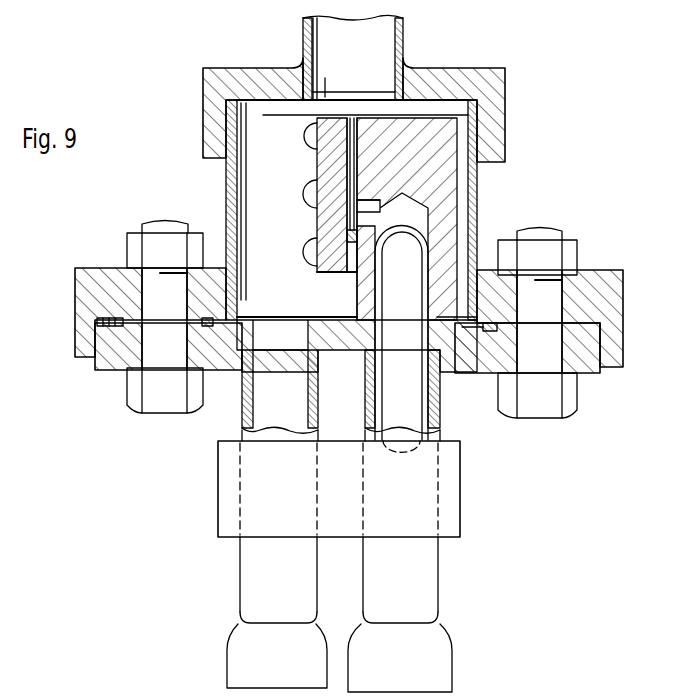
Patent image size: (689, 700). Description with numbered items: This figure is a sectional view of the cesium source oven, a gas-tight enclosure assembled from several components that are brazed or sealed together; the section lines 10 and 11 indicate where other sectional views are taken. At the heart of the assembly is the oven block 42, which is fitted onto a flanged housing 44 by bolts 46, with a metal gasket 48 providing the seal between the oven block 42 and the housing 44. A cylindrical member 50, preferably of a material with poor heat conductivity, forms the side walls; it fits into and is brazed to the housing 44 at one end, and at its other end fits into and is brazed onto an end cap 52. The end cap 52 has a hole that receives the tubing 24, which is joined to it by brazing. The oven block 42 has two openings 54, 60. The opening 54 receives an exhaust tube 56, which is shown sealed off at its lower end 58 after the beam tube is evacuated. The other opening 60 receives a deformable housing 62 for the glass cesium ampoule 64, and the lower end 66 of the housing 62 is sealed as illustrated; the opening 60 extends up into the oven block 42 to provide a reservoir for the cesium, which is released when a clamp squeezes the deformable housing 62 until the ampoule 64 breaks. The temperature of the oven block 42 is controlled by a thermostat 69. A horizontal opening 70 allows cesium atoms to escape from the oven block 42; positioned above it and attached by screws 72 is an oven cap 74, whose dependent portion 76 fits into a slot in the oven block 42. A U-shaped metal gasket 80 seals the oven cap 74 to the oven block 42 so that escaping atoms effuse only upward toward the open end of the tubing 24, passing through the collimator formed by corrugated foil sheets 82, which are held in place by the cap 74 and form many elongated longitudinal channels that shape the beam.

The section line 10- 10 is at (277, 97).
The section line 11- 11 is at (353, 110).
The tubing 24 is at (383, 34).
The oven block 42 is at (445, 178).
The flanged housing 44 is at (623, 297).
The bolts 46 is at (170, 327).
The metal gasket 48 is at (466, 325).
The cylindrical member 50 is at (226, 197).
The end cap 52 is at (505, 113).
The opening 54 is at (290, 343).
The exhaust tube 56 is at (248, 565).
The lower end 58 is at (235, 654).
The opening 60 is at (430, 208).
The deformable housing 62 is at (417, 565).
The cesium ampoule 64 is at (412, 317).
The lower end 66 is at (438, 661).
The thermostat 69 is at (461, 497).
The horizontal opening 70 is at (372, 222).
The screws 72 is at (306, 135).
The oven cap 74 is at (352, 166).
The dependent portion 76 is at (310, 217).
The U-shaped metal gasket 80 is at (307, 250).
The collimator sheets 82 is at (305, 192).